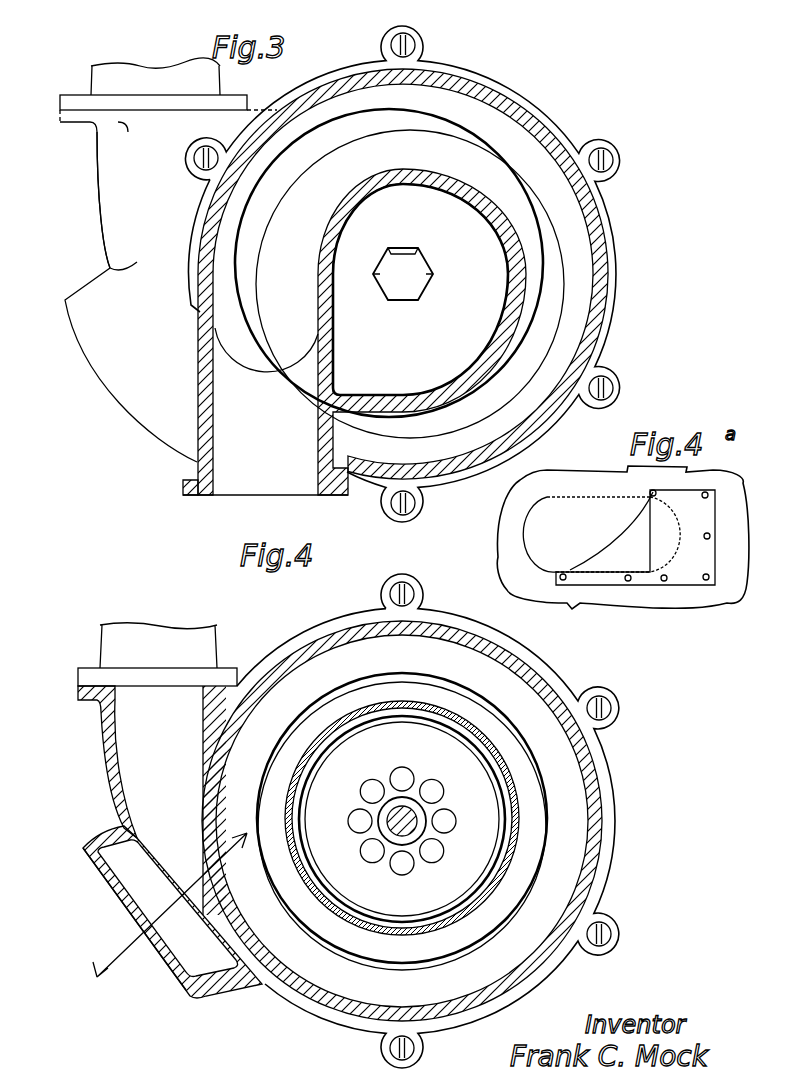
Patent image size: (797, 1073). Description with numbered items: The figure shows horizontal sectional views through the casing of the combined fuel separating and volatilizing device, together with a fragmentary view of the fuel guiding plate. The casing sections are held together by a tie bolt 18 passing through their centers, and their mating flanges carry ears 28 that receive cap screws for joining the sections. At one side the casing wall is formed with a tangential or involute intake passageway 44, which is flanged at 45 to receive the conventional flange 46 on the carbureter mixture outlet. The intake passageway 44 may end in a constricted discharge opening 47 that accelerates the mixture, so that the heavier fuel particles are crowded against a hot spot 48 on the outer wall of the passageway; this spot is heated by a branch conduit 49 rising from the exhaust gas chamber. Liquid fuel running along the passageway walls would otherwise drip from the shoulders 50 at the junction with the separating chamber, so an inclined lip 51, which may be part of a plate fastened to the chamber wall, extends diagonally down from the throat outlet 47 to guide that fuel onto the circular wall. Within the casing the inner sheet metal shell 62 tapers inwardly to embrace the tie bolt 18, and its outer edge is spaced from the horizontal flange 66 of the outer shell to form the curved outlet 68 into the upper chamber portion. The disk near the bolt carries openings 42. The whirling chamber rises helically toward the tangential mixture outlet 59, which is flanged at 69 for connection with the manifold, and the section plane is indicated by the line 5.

In FIG. 4, the section line 5- 5 is at (162, 902).
In FIG. 3, the tie bolt 18 is at (410, 293).
In FIG. 4, the tie bolt 18 is at (408, 826).
In FIG. 3, the ears 28 is at (415, 37).
In FIG. 4, the ears 28 is at (613, 710).
In FIG. 4, the openings 42 is at (375, 855).
In FIG. 3, the intake passageway 44 is at (128, 205).
In FIG. 4, the intake passageway 44 is at (135, 770).
In FIG. 3, the flange 45 is at (78, 118).
In FIG. 4, the flange 45 is at (87, 692).
In FIG. 3, the carbureter flange 46 is at (72, 102).
In FIG. 4, the carbureter flange 46 is at (88, 677).
In FIG. 4, the constricted discharge opening 47 is at (208, 892).
In FIG. 4, the hot spot 48 is at (172, 912).
In FIG. 3, the branch conduit 49 is at (125, 383).
In FIG. 4, the branch conduit 49 is at (150, 920).
In FIG. 4A, the shoulders 50 is at (594, 498).
In FIG. 4, the inclined lip 51 is at (246, 935).
In FIG. 4A, the inclined lip 51 is at (617, 546).
In FIG. 3, the tangential mixture outlet 59 is at (250, 450).
In FIG. 3, the inner sheet metal shell 62 is at (405, 332).
In FIG. 3, the horizontal flange 66 is at (405, 263).
In FIG. 3, the curved outlet 68 is at (563, 290).
In FIG. 3, the outlet flange 69 is at (183, 483).